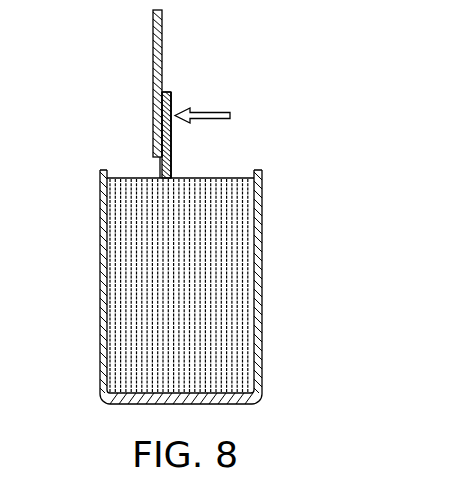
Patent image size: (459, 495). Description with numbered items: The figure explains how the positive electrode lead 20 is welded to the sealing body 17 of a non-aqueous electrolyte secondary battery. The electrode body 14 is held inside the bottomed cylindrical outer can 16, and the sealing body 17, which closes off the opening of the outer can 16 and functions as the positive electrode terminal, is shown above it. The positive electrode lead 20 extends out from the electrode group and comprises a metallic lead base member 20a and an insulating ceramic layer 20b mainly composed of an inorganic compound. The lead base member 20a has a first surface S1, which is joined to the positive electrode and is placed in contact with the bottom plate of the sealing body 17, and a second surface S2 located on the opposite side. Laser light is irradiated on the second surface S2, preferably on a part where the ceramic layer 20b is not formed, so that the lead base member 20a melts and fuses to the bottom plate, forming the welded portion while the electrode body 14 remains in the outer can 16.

The electrode body 14 is at (242, 267).
The outer can 16 is at (100, 292).
The sealing body 17 is at (152, 45).
The positive electrode lead 20 is at (173, 89).
The lead base member 20a is at (168, 95).
The ceramic layer 20b is at (172, 96).
The first surface S1 is at (155, 128).
The second surface S2 is at (172, 141).